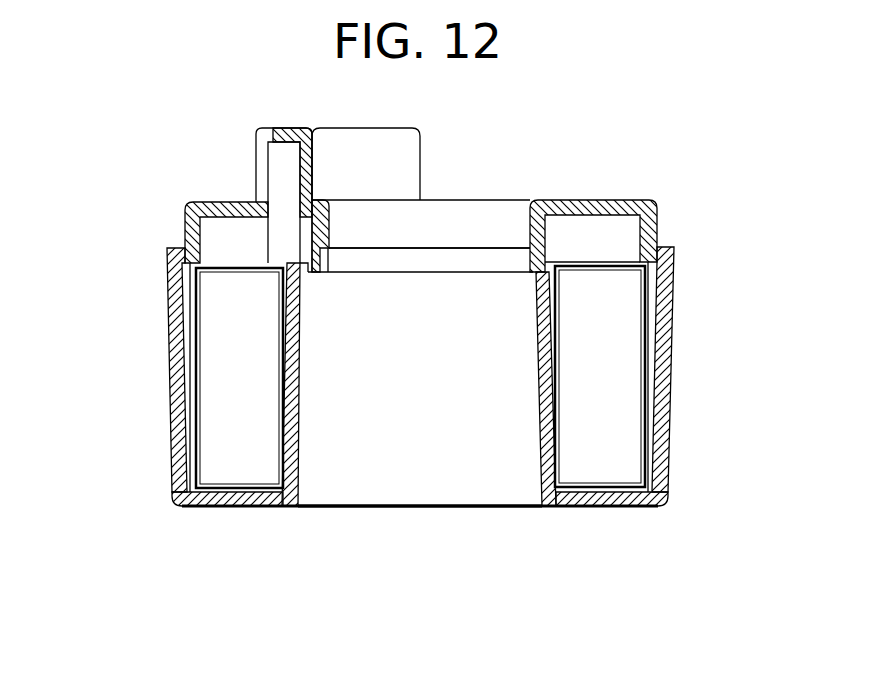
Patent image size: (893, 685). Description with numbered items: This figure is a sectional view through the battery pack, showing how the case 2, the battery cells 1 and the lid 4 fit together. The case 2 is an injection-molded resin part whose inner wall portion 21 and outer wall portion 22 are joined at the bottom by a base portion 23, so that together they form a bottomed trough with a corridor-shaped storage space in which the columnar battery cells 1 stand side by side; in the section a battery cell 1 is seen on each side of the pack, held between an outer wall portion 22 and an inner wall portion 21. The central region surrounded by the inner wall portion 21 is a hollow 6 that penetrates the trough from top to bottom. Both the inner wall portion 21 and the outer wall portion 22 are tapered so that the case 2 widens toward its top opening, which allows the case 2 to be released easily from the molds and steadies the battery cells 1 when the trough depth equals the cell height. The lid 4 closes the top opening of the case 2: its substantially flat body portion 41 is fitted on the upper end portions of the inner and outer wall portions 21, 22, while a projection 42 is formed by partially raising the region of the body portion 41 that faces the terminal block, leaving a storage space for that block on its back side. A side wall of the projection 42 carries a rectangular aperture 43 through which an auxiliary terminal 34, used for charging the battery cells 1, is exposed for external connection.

The battery cell 1 is at (222, 438).
The case 2 is at (413, 409).
The lid 4 is at (466, 186).
The hollow 6 is at (412, 430).
The inner wall portion 21 is at (295, 453).
The outer wall portion 22 is at (167, 282).
The base portion 23 is at (237, 511).
The auxiliary terminal 34 is at (277, 173).
The body portion 41 is at (663, 218).
The projection 42 is at (400, 162).
The rectangular aperture 43 is at (261, 150).